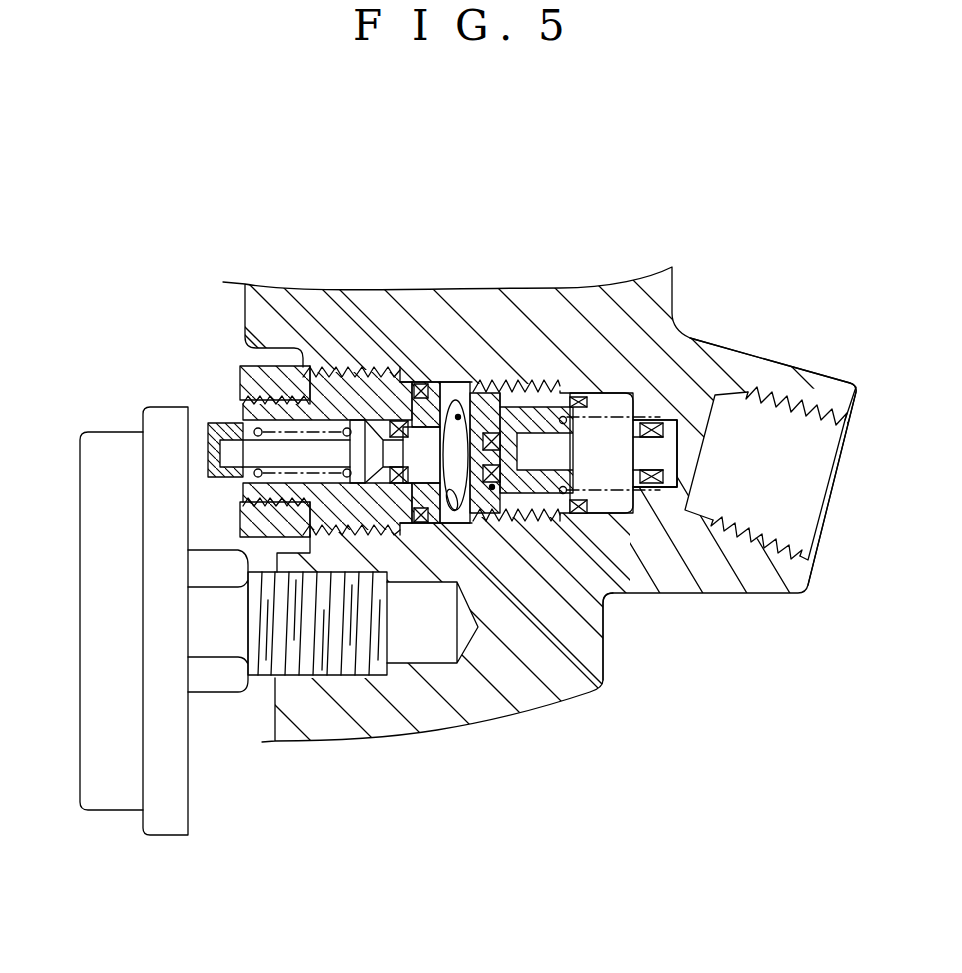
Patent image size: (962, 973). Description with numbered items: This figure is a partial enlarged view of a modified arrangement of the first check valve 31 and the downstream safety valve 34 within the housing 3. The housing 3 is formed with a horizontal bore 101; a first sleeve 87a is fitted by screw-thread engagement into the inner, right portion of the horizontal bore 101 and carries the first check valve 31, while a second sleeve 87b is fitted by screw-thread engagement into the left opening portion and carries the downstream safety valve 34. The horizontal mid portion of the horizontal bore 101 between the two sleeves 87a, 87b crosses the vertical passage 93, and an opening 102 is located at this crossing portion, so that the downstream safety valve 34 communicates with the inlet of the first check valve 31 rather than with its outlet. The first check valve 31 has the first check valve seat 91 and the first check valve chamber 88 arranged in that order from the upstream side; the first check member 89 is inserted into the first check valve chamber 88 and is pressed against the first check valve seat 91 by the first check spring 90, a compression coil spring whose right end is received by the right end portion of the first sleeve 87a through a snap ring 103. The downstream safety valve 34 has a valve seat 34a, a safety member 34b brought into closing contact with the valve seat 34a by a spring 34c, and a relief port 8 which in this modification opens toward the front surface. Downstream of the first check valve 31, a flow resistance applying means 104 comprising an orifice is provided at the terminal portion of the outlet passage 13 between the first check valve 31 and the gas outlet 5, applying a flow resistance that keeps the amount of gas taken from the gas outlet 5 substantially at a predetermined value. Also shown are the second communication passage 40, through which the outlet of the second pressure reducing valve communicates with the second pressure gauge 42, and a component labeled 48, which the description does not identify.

The housing 3 is at (348, 746).
The gas outlet 5 is at (808, 485).
The relief port 8 is at (245, 482).
The outlet passage 13 is at (540, 292).
The first check valve 31 is at (620, 530).
The downstream safety valve 34 is at (310, 384).
The valve seat 34a is at (405, 395).
The safety member 34b is at (352, 395).
The spring 34c is at (245, 418).
The second communication passage 40 is at (427, 663).
The second pressure gauge 42 is at (160, 835).
The fitting boss 48 is at (813, 377).
The first sleeve 87a is at (562, 388).
The second sleeve 87b is at (335, 372).
The first check valve chamber 88 is at (592, 395).
The first check member 89 is at (606, 602).
The first check spring 90 is at (610, 455).
The first check valve seat 91 is at (492, 490).
The vertical passage 93 is at (523, 393).
The horizontal bore 101 is at (458, 415).
The opening 102 is at (468, 548).
The snap ring 103 is at (660, 380).
The flow resistance applying means 104 is at (683, 385).